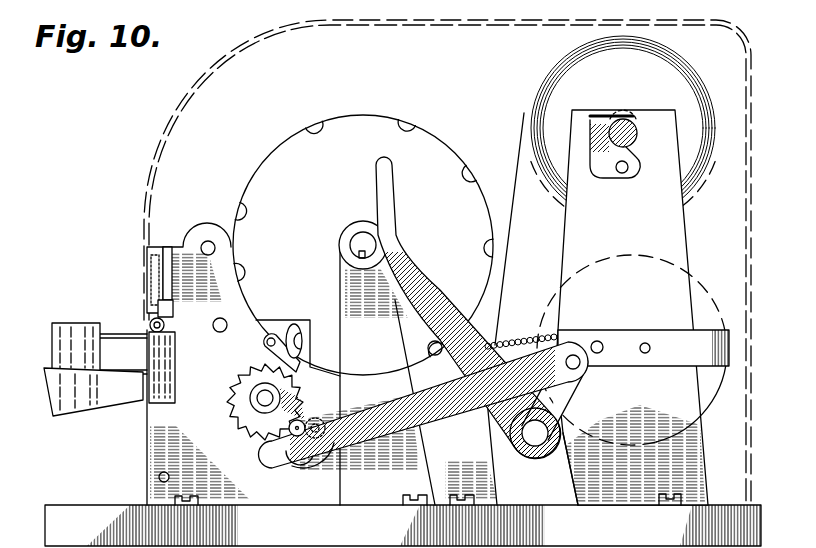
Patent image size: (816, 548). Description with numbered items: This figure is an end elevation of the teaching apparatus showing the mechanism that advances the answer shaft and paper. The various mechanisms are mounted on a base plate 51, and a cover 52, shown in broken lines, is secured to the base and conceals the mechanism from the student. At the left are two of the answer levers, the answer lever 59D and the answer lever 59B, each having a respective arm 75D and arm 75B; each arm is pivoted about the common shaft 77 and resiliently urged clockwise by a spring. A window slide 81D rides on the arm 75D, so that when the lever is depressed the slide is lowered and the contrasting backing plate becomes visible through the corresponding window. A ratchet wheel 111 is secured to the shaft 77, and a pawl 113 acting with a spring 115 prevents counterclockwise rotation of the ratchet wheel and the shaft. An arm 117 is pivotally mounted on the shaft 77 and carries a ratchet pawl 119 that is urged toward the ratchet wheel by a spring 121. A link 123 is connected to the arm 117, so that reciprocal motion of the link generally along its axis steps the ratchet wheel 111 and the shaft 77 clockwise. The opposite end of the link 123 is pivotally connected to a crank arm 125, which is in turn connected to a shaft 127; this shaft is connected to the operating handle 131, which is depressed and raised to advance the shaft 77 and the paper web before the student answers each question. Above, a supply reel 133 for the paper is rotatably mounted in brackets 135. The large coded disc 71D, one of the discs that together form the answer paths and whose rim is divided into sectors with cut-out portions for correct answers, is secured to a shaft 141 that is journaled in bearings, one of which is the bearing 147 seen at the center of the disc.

The base plate 51 is at (45, 523).
The cover 52 is at (161, 165).
The answer lever 59B is at (76, 420).
The answer lever 59D is at (70, 316).
The disc 71D is at (349, 121).
The arm 75B is at (133, 401).
The arm 75D is at (126, 332).
The common shaft 77 is at (266, 388).
The window slide 81D is at (165, 325).
The ratchet wheel 111 is at (239, 434).
The pawl 113 is at (270, 335).
The spring 115 is at (297, 325).
The arm 117 is at (270, 444).
The ratchet pawl 119 is at (288, 448).
The spring 121 is at (300, 466).
The link 123 is at (462, 412).
The crank arm 125 is at (577, 379).
The shaft 127 is at (556, 432).
The operating handle 131 is at (393, 201).
The supply reel 133 is at (694, 76).
The brackets 135 is at (687, 253).
The shaft 141 is at (352, 254).
The bearing 147 is at (339, 240).